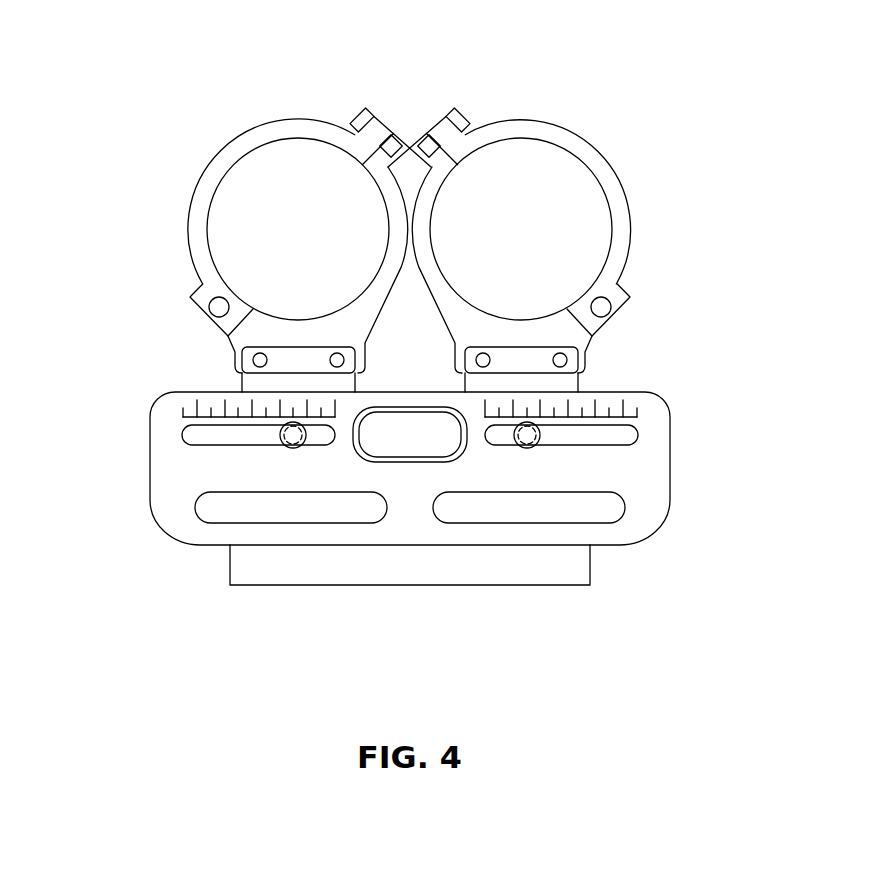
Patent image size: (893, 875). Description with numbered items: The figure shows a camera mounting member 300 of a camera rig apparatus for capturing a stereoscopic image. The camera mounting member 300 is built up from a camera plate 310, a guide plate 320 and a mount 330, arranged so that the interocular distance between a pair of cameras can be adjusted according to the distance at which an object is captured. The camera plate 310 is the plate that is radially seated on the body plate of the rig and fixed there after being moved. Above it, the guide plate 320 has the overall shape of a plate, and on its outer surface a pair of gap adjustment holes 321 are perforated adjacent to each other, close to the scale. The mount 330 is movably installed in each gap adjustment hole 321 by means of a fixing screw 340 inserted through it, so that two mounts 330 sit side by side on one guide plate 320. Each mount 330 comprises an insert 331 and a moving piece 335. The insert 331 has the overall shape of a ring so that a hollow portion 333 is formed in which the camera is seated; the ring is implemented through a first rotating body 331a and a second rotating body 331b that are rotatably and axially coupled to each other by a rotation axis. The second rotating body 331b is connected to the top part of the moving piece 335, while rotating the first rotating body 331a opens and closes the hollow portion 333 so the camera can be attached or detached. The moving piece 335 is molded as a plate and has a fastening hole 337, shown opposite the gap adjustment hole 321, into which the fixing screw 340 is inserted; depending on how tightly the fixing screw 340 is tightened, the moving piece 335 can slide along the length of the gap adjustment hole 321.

The camera mounting member 300 is at (645, 90).
The camera plate 310 is at (405, 587).
The guide plate 320 is at (167, 528).
The gap adjustment hole 321 is at (196, 437).
The mount 330 is at (191, 203).
The insert 331 is at (392, 45).
The first rotating body 331a is at (271, 130).
The second rotating body 331b is at (381, 164).
The hollow portion 333 is at (247, 193).
The moving piece 335 is at (252, 386).
The fastening hole 337 is at (293, 448).
The fixing screw 340 is at (295, 448).